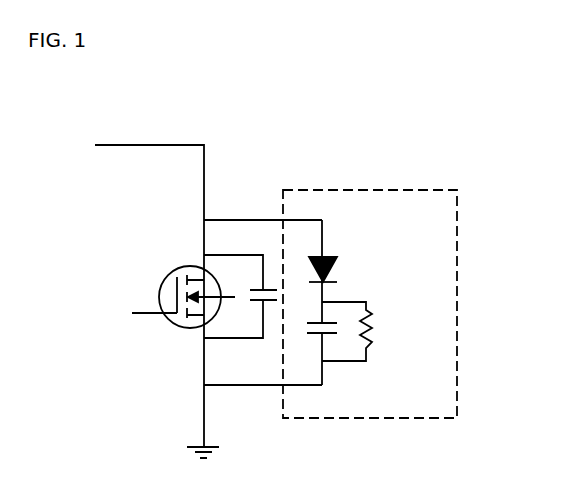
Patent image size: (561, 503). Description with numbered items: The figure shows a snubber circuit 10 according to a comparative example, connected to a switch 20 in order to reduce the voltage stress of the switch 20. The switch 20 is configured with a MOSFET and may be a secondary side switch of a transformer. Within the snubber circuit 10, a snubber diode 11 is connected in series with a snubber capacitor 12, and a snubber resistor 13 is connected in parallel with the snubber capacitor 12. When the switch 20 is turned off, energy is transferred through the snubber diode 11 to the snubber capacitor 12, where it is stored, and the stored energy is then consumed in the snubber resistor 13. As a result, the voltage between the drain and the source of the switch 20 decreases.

The snubber circuit 10 is at (428, 187).
The snubber diode 11 is at (327, 253).
The snubber capacitor C 12 is at (333, 335).
The snubber resistor R 13 is at (368, 340).
The switch Q1 20 is at (161, 292).